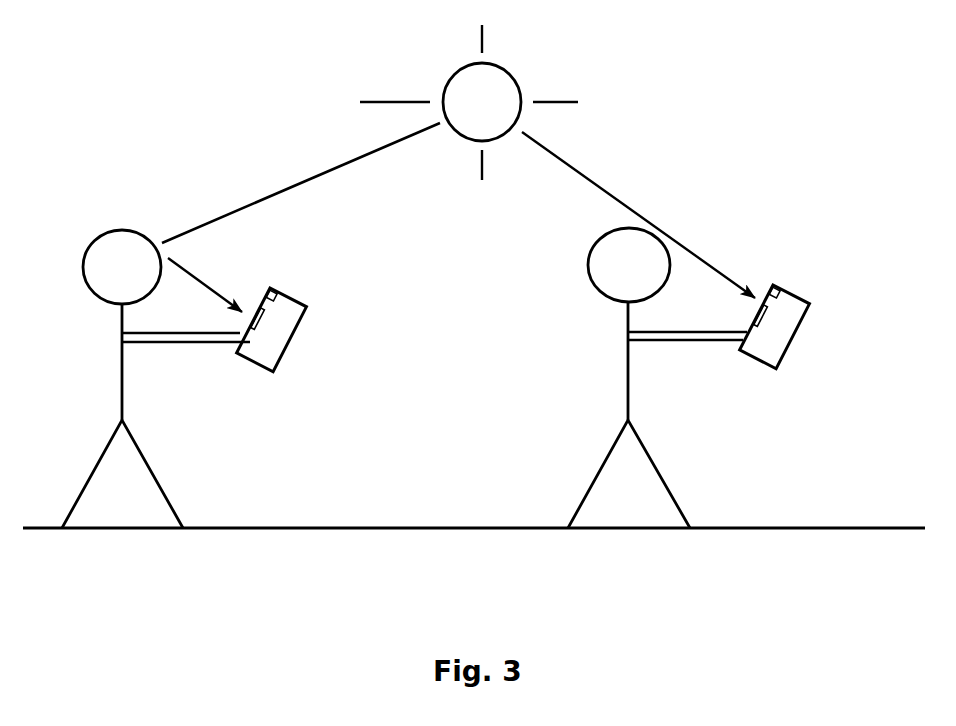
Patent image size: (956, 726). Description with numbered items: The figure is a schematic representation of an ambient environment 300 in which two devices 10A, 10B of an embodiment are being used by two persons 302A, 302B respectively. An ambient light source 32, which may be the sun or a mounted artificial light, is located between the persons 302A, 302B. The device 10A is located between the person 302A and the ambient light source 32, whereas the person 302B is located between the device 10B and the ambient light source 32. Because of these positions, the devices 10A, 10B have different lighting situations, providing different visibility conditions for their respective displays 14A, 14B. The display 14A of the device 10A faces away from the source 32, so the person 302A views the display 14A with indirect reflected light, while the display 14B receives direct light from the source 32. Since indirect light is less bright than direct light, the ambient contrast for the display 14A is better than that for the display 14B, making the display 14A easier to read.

The ambient light source 32 is at (495, 90).
The ambient environment 300 is at (414, 541).
The person 302A is at (172, 483).
The person 302B is at (680, 487).
The device 10A is at (283, 323).
The device 10B is at (787, 330).
The display 14A is at (237, 318).
The display 14B is at (753, 317).